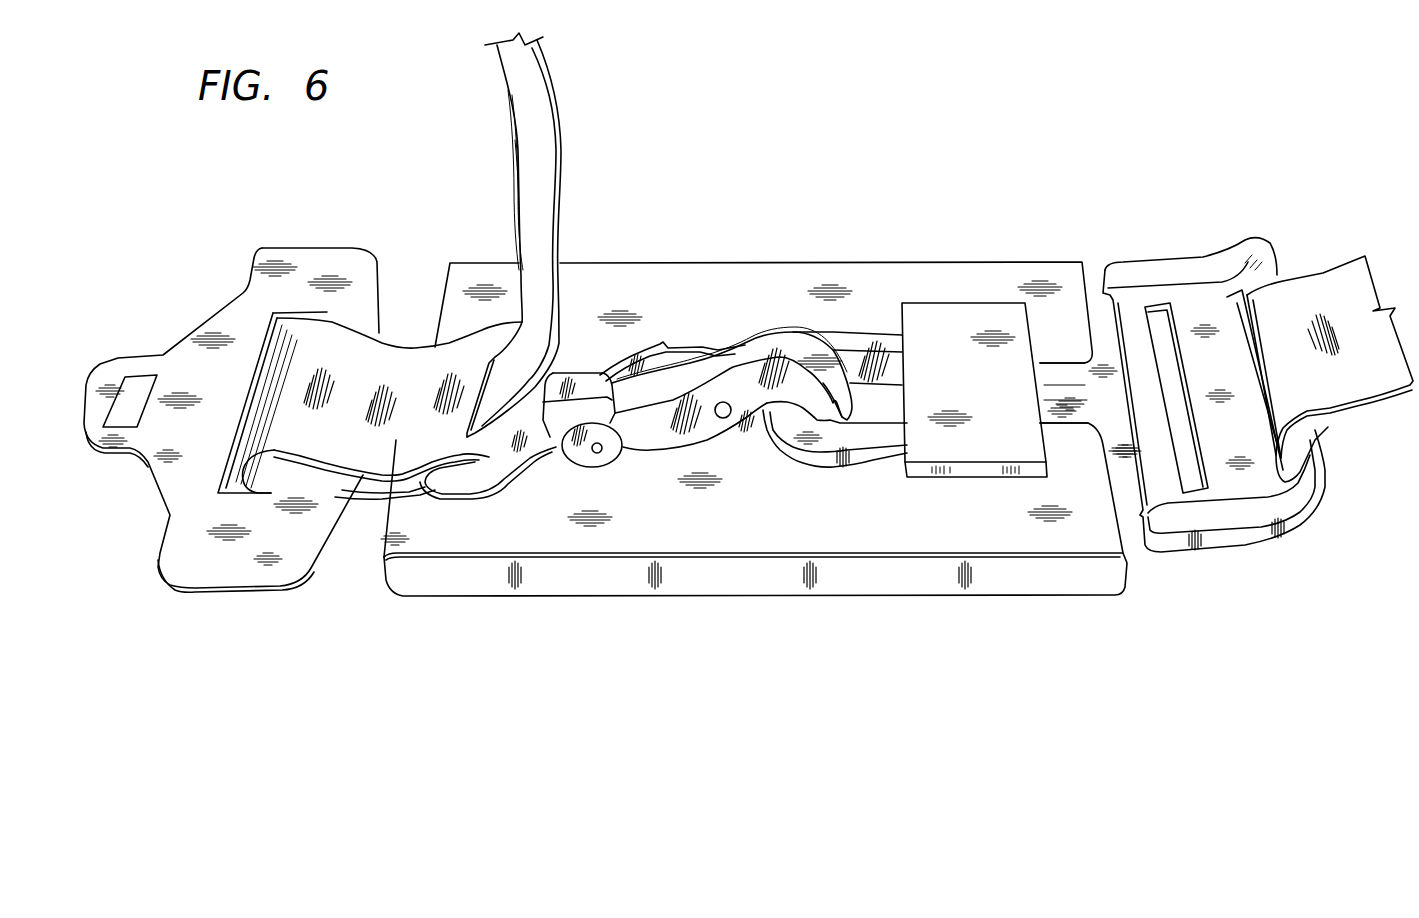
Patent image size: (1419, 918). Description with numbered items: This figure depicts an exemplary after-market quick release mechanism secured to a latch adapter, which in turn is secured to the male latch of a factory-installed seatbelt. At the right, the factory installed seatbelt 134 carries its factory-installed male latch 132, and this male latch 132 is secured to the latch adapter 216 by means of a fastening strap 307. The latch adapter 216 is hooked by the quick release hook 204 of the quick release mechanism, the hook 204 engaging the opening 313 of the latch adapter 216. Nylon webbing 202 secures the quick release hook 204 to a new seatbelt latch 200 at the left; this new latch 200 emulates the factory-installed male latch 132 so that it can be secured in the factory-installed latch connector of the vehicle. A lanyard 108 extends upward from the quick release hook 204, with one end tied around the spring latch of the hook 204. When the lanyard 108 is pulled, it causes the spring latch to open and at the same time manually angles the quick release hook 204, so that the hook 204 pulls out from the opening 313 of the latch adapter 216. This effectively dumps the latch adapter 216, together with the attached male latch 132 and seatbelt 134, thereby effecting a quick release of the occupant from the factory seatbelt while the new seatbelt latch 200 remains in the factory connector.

The lanyard 108 is at (544, 188).
The new seatbelt latch 200 is at (166, 480).
The nylon webbing 202 is at (360, 457).
The quick release hook 204 is at (737, 358).
The latch adapter 216 is at (826, 445).
The opening of the latch adapter 313 is at (880, 400).
The fastening strap 307 is at (978, 443).
The factory-installed male latch 132 is at (1140, 272).
The factory installed seatbelt 134 is at (1327, 288).